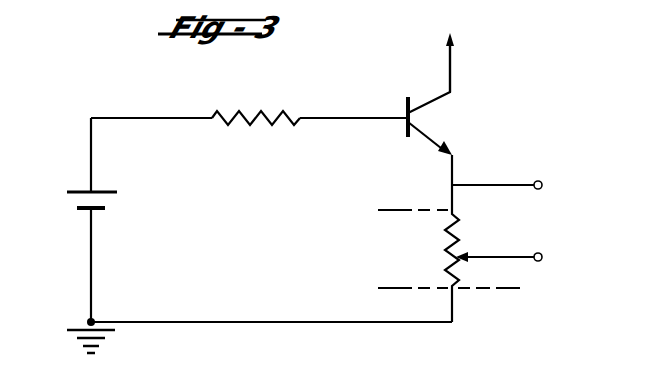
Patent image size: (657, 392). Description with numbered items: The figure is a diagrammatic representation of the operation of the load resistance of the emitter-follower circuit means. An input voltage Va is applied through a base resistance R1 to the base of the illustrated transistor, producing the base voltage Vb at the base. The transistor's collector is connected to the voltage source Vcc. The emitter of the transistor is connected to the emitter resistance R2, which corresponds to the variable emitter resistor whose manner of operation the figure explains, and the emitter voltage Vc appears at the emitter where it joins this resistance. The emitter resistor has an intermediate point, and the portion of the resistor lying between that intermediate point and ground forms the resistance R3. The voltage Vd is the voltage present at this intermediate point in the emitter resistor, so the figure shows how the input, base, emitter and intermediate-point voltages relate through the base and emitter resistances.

The voltage source Vcc is at (471, 62).
The input voltage Va is at (82, 206).
The base resistance R1 is at (276, 111).
The base voltage Vb is at (352, 120).
The emitter voltage Vc is at (514, 190).
The emitter resistance R2 is at (397, 212).
The voltage at intermediate point Vd is at (517, 262).
The resistance between intermediate point and ground R3 is at (503, 258).